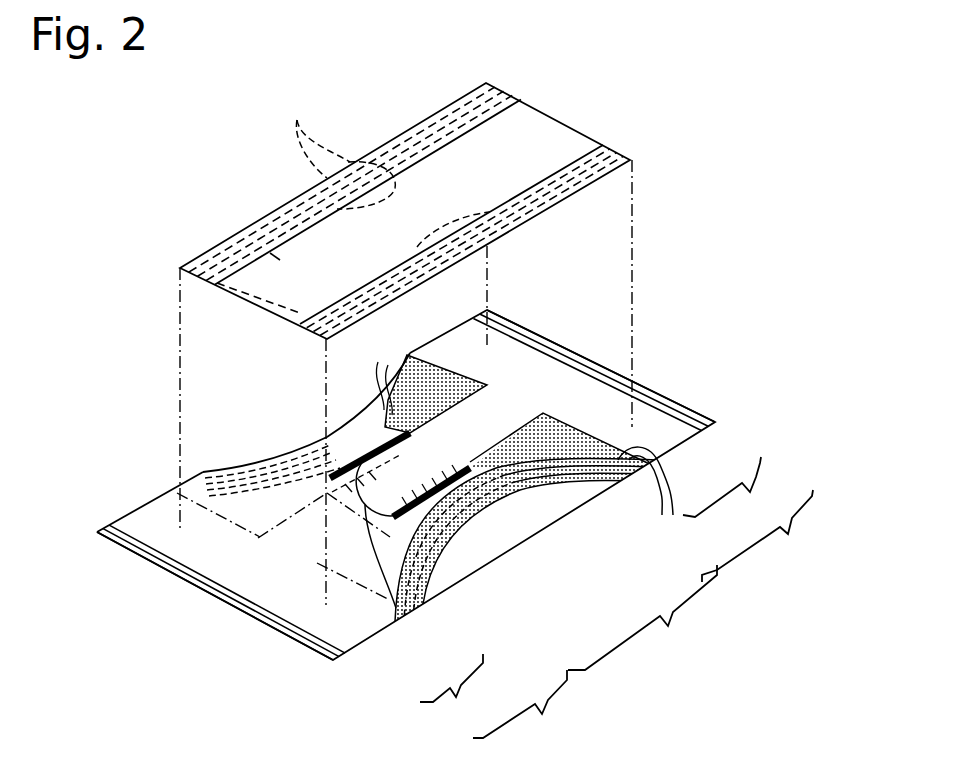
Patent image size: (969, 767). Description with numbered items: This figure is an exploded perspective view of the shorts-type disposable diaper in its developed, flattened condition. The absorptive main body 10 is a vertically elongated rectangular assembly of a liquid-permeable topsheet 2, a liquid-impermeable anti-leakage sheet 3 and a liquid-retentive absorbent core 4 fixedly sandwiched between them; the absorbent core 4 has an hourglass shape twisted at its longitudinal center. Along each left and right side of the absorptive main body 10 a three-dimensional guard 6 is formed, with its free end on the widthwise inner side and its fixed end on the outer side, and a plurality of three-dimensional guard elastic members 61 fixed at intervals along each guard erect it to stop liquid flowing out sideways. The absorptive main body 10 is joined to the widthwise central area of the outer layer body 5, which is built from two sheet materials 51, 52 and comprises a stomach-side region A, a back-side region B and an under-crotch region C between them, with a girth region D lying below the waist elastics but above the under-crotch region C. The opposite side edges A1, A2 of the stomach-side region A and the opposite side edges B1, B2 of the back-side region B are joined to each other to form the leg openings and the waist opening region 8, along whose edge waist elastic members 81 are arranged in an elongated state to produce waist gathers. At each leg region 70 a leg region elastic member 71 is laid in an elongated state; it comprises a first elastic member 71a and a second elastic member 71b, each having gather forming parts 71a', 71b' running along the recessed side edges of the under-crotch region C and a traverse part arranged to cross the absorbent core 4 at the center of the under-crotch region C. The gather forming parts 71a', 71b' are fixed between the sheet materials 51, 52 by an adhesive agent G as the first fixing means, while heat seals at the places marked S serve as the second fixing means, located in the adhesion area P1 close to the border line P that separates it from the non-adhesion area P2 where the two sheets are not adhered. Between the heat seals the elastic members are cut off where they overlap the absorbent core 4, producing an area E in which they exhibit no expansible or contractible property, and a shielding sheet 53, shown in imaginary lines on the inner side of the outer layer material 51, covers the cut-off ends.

The absorptive main body 10 is at (503, 137).
The topsheet 2 is at (533, 140).
The anti-leakage sheet 3 is at (585, 192).
The absorbent core 4 is at (237, 230).
The three-dimensional guard 6 is at (307, 193).
The three-dimensional guard elastic members 61 is at (317, 132).
The outer layer body 5 is at (674, 390).
The sheet material (outer layer material) 51 is at (654, 417).
The sheet material 52 is at (142, 523).
The shielding sheet 53 is at (398, 612).
The waist opening region 8 is at (142, 558).
The waist elastic members 81 is at (177, 573).
The leg region 70 is at (328, 435).
The leg region elastic member 71 is at (607, 490).
The first elastic member 71a is at (231, 431).
The gather forming part of first elastic member 71a' is at (358, 487).
The second elastic member 71b is at (665, 499).
The gather forming part of second elastic member 71b' is at (460, 464).
The adhesive agent G is at (407, 355).
The heat seal places S is at (385, 404).
The area of no expansible/contractible property E is at (420, 447).
The border line P is at (322, 543).
The adhesion area P1 is at (248, 522).
The non-adhesion area P2 is at (513, 417).
The stomach-side region A is at (520, 704).
The back-side region B is at (757, 536).
The under-crotch region C is at (642, 617).
The girth region D is at (596, 588).
The side edge of stomach-side region A1 is at (390, 615).
The side edge of stomach-side region A2 is at (120, 517).
The side edge of back-side region B1 is at (712, 408).
The side edge of back-side region B2 is at (455, 322).